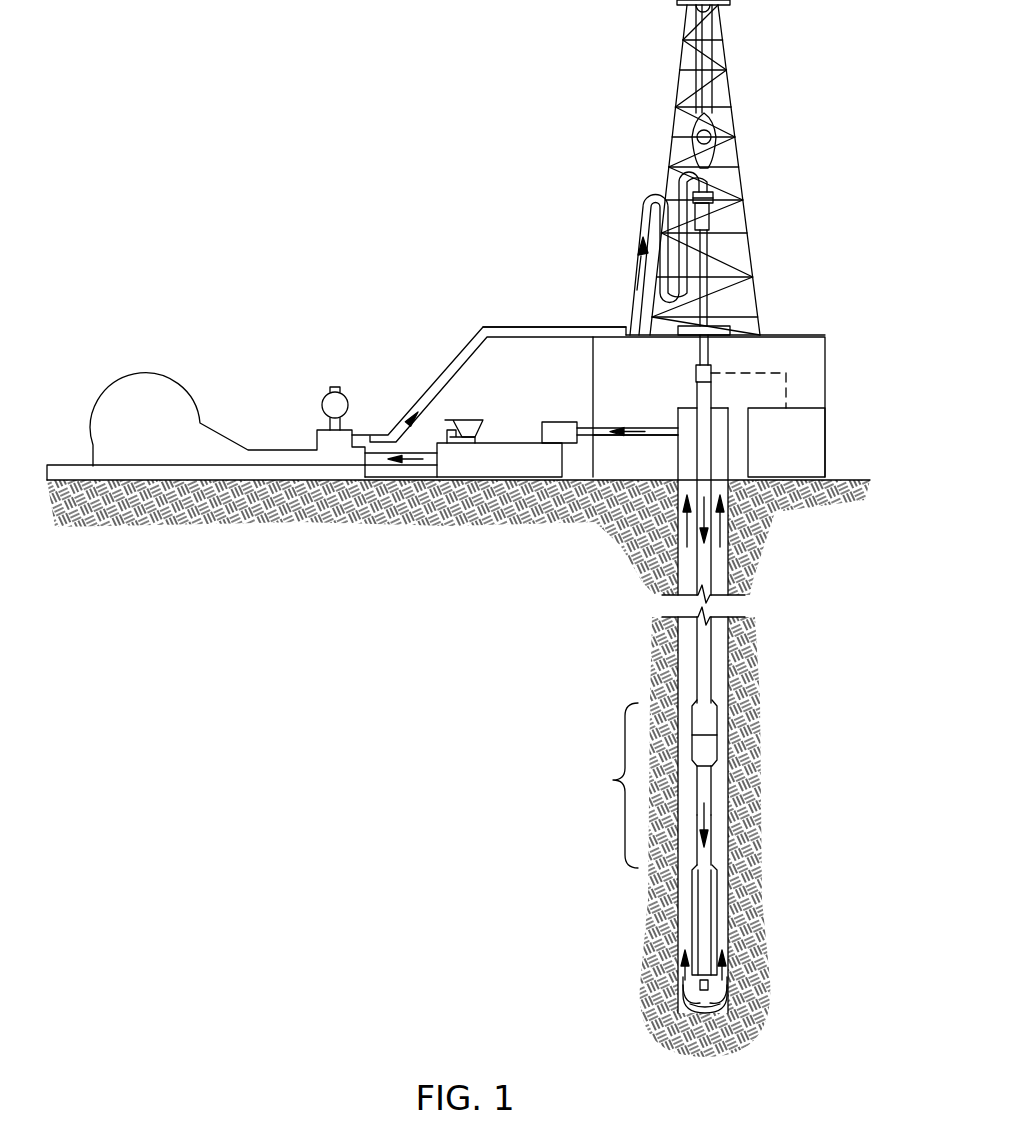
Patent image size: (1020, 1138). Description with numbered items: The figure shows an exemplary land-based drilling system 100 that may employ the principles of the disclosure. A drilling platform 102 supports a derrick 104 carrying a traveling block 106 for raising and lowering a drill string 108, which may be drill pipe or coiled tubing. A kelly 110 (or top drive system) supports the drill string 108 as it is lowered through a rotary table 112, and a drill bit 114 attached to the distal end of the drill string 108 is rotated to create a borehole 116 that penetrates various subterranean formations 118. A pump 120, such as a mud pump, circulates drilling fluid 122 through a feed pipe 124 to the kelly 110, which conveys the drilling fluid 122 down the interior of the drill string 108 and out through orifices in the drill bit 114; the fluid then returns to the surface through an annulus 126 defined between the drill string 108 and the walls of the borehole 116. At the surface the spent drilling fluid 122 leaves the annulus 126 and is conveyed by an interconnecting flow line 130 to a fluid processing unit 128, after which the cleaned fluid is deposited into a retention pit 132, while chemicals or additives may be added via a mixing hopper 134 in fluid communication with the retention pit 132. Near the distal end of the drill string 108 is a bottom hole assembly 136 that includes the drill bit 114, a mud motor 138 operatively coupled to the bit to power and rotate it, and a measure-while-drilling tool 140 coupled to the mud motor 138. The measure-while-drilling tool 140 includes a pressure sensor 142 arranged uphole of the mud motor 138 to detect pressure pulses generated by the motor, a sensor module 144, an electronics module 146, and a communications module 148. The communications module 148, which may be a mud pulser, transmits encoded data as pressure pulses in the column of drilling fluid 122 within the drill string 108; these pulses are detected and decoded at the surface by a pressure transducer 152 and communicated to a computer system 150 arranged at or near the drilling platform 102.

The drilling system 100 is at (511, 142).
The drilling platform 102 is at (826, 366).
The derrick 104 is at (728, 47).
The traveling block 106 is at (714, 126).
The drill string 108 is at (703, 577).
The kelly 110 is at (710, 243).
The rotary table 112 is at (733, 328).
The drill bit 114 is at (718, 996).
The borehole 116 is at (745, 660).
The subterranean formations 118 is at (509, 706).
The pump 120 is at (167, 443).
The drilling fluid 122 is at (380, 440).
The feed pipe 124 is at (510, 326).
The annulus 126 is at (725, 815).
The fluid processing unit 128 is at (553, 422).
The interconnecting flow line 130 is at (662, 436).
The retention pit 132 is at (483, 480).
The mixing hopper 134 is at (466, 418).
The bottom hole assembly 136 is at (593, 879).
The mud motor 138 is at (705, 902).
The measure-while-drilling tool 140 is at (600, 785).
The pressure sensor 142 is at (705, 856).
The sensor module 144 is at (705, 781).
The electronics module 146 is at (705, 752).
The communications module 148 is at (705, 722).
The computer system 150 is at (804, 455).
The pressure transducer 152 is at (712, 368).